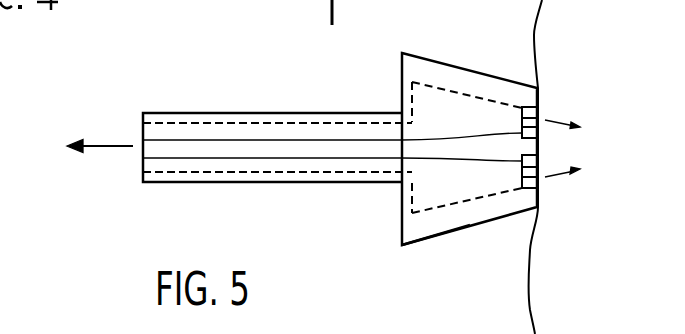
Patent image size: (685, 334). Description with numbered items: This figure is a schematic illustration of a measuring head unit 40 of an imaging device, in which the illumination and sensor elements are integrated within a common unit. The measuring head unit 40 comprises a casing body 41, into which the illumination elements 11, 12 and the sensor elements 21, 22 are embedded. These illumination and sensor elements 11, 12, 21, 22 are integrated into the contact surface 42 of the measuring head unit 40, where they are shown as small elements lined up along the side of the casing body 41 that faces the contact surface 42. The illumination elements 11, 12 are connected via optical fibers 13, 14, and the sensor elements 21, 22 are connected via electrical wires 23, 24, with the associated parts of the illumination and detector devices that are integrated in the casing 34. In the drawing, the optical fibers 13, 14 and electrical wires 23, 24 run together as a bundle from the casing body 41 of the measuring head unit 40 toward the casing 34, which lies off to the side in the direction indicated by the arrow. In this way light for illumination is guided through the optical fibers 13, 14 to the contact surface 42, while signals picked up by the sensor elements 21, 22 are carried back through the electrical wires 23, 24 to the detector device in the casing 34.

The illumination element 11 is at (525, 105).
The illumination element 12 is at (540, 205).
The optical fiber 13 is at (303, 123).
The optical fiber 14 is at (300, 173).
The sensor element 21 is at (522, 123).
The sensor element 22 is at (522, 172).
The electrical wire 23 is at (218, 140).
The electrical wire 24 is at (190, 155).
The casing 34 is at (74, 145).
The measuring head unit 40 is at (443, 70).
The casing body 41 is at (422, 228).
The contact surface 42 is at (545, 95).